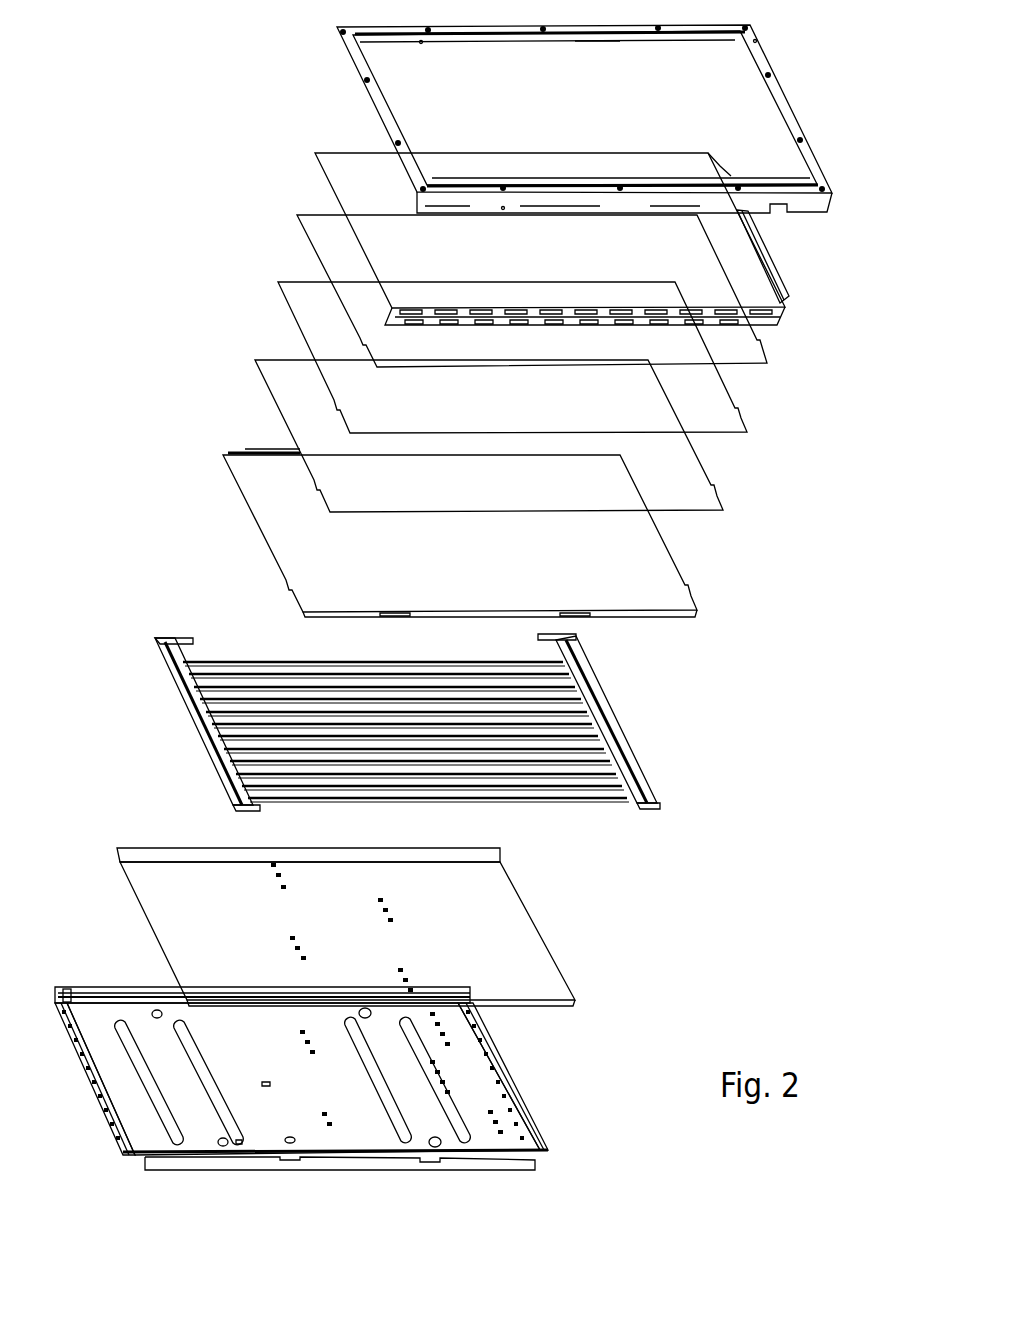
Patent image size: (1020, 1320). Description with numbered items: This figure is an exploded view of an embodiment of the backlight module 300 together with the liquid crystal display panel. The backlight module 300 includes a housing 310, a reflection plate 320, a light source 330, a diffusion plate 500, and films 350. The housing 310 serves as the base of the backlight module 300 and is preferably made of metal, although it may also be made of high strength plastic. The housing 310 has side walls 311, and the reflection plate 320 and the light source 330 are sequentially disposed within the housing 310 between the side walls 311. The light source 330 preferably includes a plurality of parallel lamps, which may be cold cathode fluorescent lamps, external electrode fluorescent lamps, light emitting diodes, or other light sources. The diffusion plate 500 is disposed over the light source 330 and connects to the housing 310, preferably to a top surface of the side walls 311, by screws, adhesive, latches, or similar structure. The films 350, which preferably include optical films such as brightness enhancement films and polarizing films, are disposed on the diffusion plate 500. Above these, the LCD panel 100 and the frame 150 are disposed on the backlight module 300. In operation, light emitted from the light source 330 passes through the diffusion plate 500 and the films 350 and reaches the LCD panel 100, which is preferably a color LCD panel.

The frame 150 is at (355, 52).
The LCD panel 100 is at (348, 165).
The backlight module 300 is at (421, 721).
The films 350 is at (488, 357).
The diffusion plate 500 is at (272, 508).
The light source 330 is at (160, 657).
The reflection plate 320 is at (150, 873).
The housing 310 is at (105, 1060).
The side walls 311 is at (117, 1003).